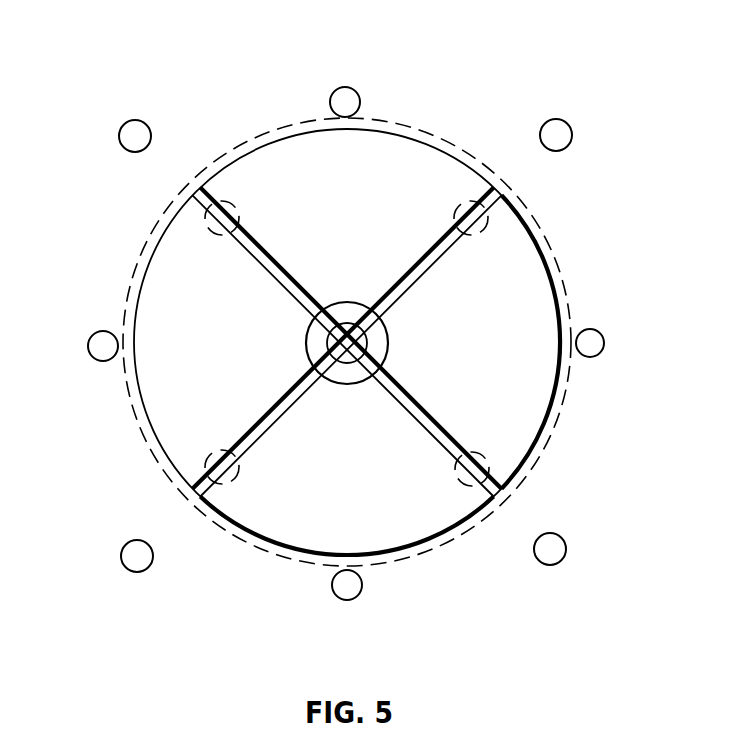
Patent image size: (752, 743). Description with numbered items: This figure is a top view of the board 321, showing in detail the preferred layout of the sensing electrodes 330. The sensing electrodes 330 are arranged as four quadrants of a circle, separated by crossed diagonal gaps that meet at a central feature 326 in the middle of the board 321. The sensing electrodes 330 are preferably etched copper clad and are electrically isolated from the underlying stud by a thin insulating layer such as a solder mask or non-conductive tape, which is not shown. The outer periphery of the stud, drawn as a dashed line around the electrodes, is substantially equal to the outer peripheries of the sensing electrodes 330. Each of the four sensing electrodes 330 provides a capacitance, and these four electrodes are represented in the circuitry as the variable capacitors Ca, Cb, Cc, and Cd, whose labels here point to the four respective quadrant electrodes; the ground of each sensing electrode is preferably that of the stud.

The board 321 is at (574, 205).
The center hub 326 is at (346, 302).
The sensing electrodes 330 is at (364, 192).
The variable capacitor Ca is at (405, 137).
The variable capacitor Cb is at (152, 258).
The variable capacitor Cc is at (396, 552).
The variable capacitor Cd is at (540, 443).